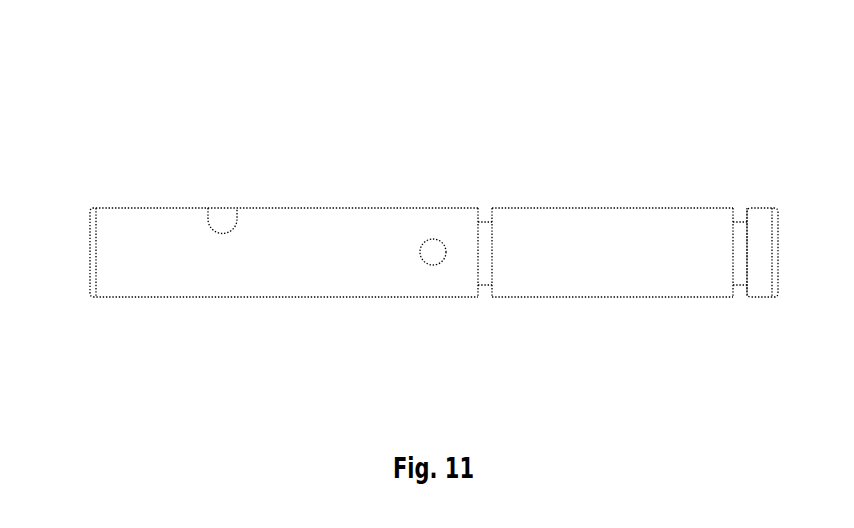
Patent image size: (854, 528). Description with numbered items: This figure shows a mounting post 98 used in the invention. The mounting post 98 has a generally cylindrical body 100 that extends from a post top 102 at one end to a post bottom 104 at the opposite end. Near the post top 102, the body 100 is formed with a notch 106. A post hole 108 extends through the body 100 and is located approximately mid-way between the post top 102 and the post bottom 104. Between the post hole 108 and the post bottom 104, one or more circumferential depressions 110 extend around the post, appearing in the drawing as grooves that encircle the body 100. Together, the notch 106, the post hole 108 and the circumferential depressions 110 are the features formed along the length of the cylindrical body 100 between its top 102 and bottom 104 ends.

The mounting post 98 is at (351, 106).
The body 100 is at (626, 243).
The post top 102 is at (91, 245).
The post bottom 104 is at (778, 233).
The notch 106 is at (237, 222).
The post hole 108 is at (432, 239).
The circumferential depressions 110 is at (485, 290).